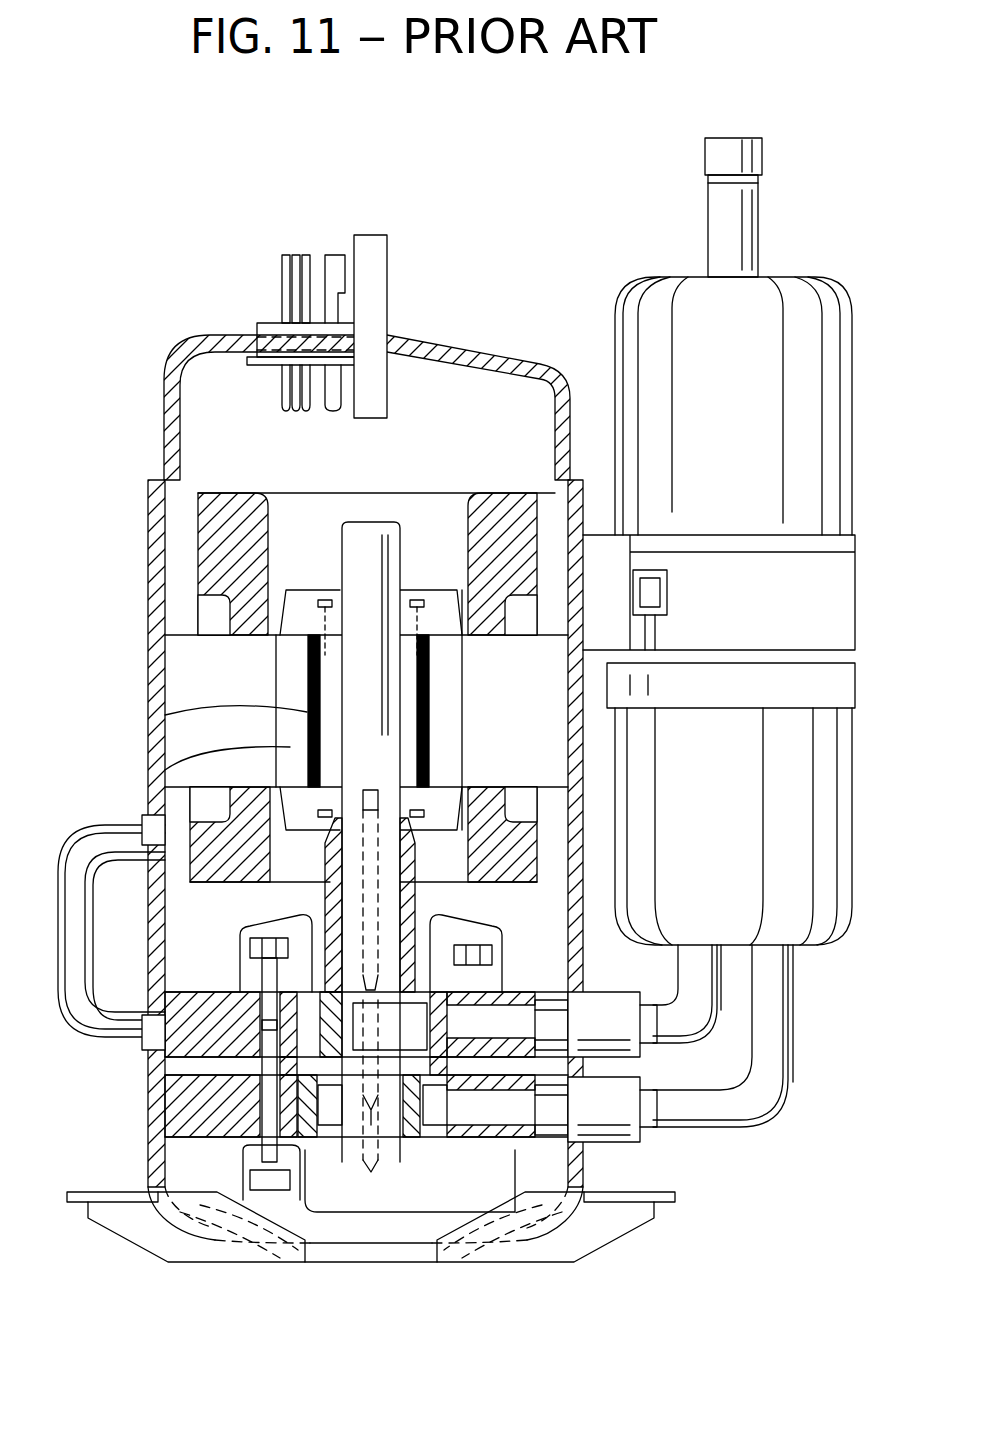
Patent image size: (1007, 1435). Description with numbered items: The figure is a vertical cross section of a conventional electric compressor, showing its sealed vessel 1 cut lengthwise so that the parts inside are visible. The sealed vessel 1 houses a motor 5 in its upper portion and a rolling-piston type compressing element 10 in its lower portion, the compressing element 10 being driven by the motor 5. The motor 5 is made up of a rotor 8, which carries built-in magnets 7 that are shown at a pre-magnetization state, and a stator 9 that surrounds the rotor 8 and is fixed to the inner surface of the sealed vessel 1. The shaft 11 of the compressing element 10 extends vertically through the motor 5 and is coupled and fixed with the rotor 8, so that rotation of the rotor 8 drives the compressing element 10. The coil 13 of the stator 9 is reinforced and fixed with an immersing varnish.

The sealed vessel 1 is at (195, 340).
The motor 5 is at (300, 582).
The magnets 7 is at (305, 712).
The rotor 8 is at (290, 742).
The stator 9 is at (200, 665).
The rolling-piston type compressing element 10 is at (195, 1110).
The shaft 11 is at (362, 555).
The coil 13 is at (215, 522).